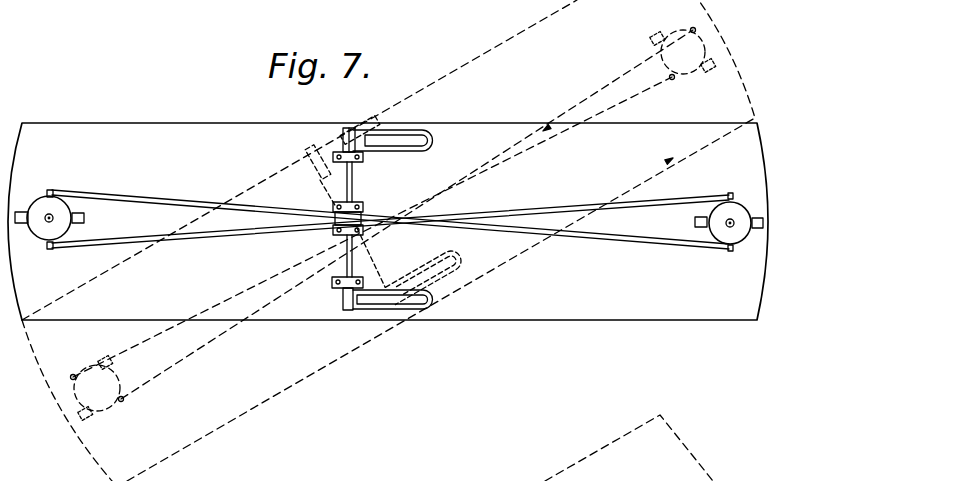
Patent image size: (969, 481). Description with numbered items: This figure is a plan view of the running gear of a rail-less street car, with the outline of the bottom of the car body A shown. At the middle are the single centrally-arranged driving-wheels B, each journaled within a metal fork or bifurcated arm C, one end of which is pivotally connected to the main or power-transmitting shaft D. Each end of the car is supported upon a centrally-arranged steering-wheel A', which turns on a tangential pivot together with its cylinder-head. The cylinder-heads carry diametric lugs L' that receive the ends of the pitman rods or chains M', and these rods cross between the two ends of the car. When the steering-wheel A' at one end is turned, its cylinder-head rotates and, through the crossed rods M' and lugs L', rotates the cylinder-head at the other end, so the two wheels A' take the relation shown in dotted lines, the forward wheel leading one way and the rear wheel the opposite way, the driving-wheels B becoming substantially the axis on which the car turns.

The car body A is at (388, 240).
The steering-wheel A' is at (389, 225).
The diametric lugs L' is at (391, 215).
The pitman rods or chains M' is at (390, 214).
The main or power-transmitting shaft D is at (353, 185).
The driving-wheels B is at (410, 144).
The fork or bifurcated arm C is at (428, 147).